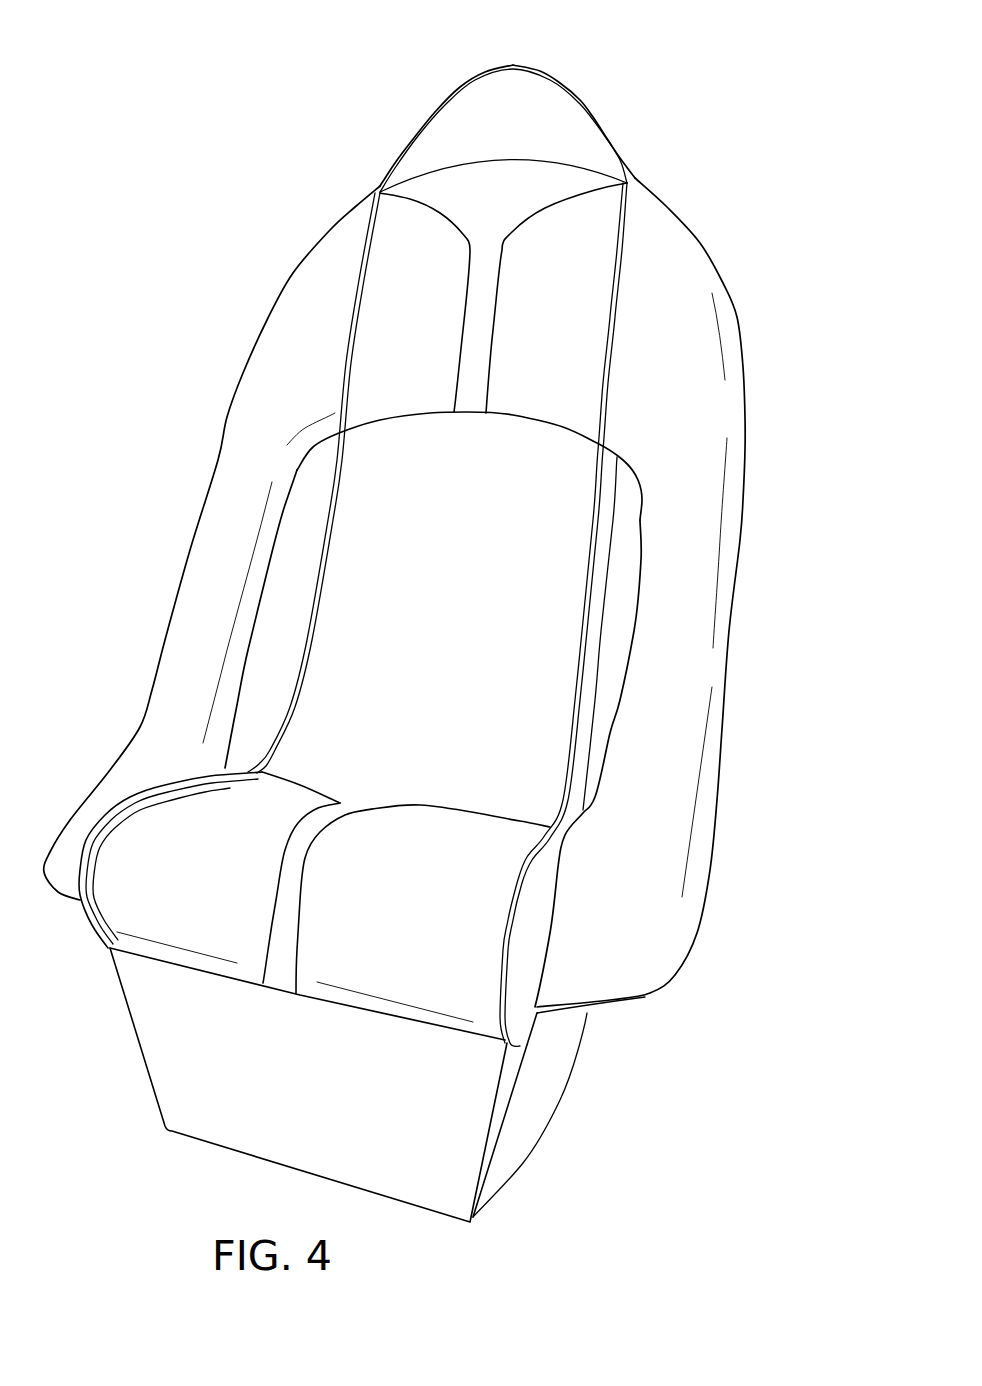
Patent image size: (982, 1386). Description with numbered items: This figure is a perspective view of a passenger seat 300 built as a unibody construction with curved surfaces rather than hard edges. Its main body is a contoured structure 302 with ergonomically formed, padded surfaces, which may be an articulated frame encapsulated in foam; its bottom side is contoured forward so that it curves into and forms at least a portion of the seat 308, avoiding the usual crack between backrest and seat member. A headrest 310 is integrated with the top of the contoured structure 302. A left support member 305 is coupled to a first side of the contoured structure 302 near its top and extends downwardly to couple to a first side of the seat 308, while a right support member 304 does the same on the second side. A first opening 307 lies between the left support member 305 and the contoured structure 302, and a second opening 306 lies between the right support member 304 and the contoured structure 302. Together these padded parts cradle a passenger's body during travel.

The passenger seat 300 is at (272, 171).
The contoured structure 302 is at (380, 280).
The right support member 304 is at (198, 573).
The left support member 305 is at (715, 669).
The opening 306 is at (311, 500).
The first opening 307 is at (633, 499).
The seat 308 is at (213, 967).
The headrest 310 is at (557, 98).